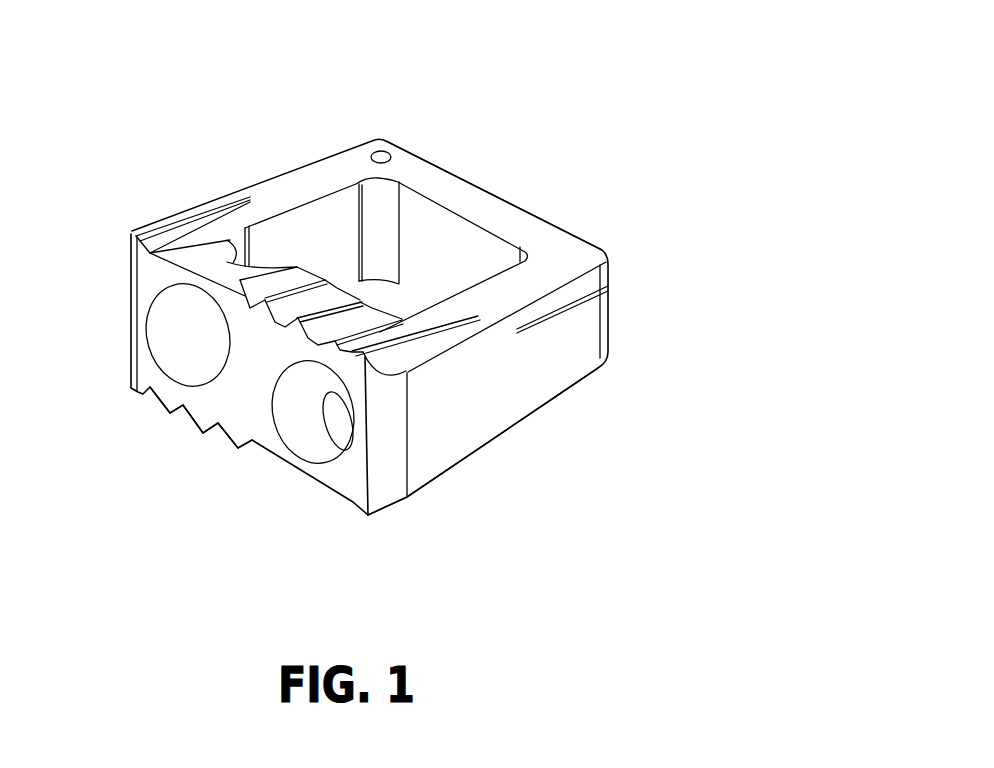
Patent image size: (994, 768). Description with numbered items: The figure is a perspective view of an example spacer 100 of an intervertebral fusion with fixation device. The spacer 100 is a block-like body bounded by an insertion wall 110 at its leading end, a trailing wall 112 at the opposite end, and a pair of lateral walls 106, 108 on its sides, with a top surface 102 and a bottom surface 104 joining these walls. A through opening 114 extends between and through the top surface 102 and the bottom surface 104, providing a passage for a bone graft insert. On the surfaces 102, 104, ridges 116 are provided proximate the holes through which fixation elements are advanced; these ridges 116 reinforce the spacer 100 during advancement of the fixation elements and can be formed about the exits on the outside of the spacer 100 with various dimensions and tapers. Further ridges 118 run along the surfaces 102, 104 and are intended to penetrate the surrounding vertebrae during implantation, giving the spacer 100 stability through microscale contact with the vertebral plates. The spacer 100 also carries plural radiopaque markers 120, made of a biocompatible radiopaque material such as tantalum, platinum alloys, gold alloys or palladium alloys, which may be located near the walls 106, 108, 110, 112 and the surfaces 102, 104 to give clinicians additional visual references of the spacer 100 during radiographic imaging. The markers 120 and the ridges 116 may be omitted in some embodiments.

The spacer 100 is at (541, 139).
The top surface 102 is at (293, 192).
The bottom surface 104 is at (437, 477).
The lateral wall 106 is at (515, 368).
The lateral wall 108 is at (305, 160).
The insertion wall 110 is at (580, 236).
The trailing wall 112 is at (258, 375).
The through opening 114 is at (397, 303).
The ridges 116 is at (215, 265).
The ridges 118 is at (360, 338).
The radiopaque markers 120 is at (384, 152).